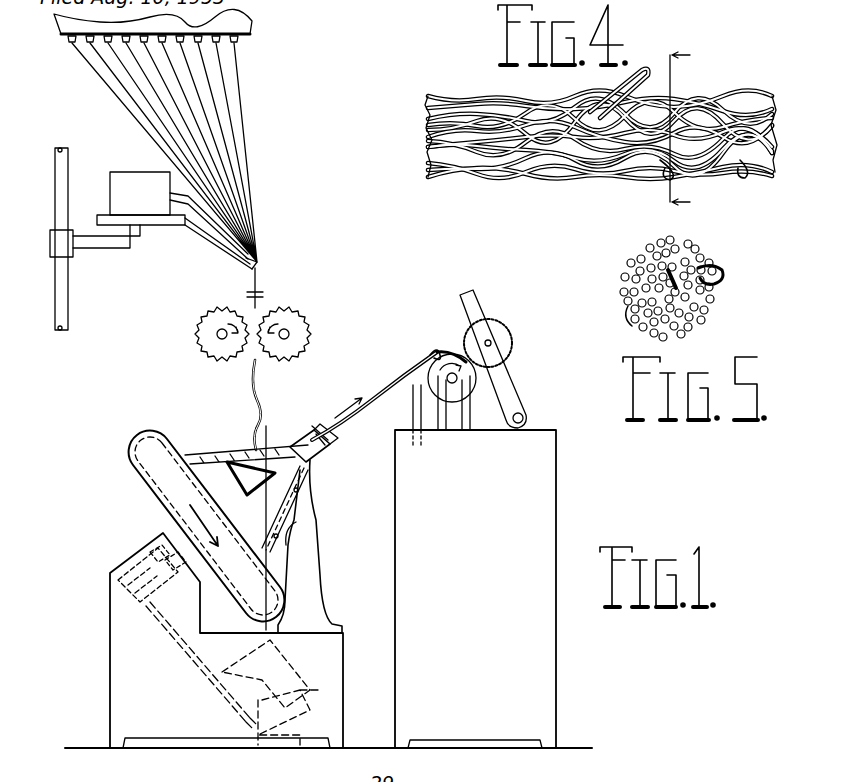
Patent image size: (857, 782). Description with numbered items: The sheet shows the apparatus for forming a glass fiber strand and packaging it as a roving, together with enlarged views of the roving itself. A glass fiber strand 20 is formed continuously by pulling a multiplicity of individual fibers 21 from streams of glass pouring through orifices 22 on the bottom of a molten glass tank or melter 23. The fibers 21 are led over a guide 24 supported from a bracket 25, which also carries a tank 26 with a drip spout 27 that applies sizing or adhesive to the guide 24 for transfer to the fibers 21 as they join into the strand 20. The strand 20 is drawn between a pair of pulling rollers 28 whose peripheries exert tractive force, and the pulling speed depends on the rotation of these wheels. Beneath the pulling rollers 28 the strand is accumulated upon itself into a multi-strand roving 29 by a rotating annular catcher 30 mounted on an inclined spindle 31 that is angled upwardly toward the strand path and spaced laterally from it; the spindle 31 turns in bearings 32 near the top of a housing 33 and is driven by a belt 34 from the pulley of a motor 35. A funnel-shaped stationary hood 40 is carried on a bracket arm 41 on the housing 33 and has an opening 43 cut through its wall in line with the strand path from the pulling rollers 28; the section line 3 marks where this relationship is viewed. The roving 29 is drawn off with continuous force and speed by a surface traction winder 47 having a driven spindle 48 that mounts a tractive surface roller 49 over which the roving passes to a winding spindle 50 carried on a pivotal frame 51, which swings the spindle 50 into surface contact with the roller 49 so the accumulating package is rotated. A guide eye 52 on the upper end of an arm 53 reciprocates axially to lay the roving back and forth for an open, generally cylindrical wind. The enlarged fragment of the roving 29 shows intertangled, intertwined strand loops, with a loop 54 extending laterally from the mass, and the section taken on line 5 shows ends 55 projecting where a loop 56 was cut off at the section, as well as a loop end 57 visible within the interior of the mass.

In FIG. 1, the section line 3- 3 is at (276, 429).
In FIG. 4, the section line 5- 5 is at (687, 129).
In FIG. 1, the glass fiber strand 20 is at (262, 284).
In FIG. 1, the individual fibers 21 is at (250, 140).
In FIG. 1, the orifices 22 is at (68, 44).
In FIG. 1, the molten glass tank or melter 23 is at (262, 31).
In FIG. 1, the guide 24 is at (263, 265).
In FIG. 1, the bracket 25 is at (58, 290).
In FIG. 1, the tank 26 is at (134, 173).
In FIG. 1, the drip spout 27 is at (225, 237).
In FIG. 1, the pulling rollers 28 is at (320, 324).
In FIG. 1, the roving 29 is at (392, 380).
In FIG. 4, the roving 29 is at (740, 80).
In FIG. 5, the roving 29 is at (718, 249).
In FIG. 1, the rotating annular catcher 30 is at (131, 491).
In FIG. 1, the inclined spindle 31 is at (140, 557).
In FIG. 1, the bearings 32 is at (152, 543).
In FIG. 1, the housing 33 is at (110, 650).
In FIG. 1, the belt 34 is at (146, 612).
In FIG. 1, the motor 35 is at (322, 690).
In FIG. 1, the stationary hood 40 is at (312, 472).
In FIG. 1, the bracket arm 41 is at (320, 589).
In FIG. 1, the opening 43 is at (250, 460).
In FIG. 1, the surface traction winder 47 is at (562, 514).
In FIG. 1, the driven spindle 48 is at (460, 378).
In FIG. 1, the tractive surface roller 49 is at (473, 430).
In FIG. 1, the winding spindle 50 is at (492, 343).
In FIG. 1, the pivotal frame 51 is at (514, 400).
In FIG. 1, the guide eye 52 is at (437, 350).
In FIG. 1, the arm 53 is at (413, 408).
In FIG. 4, the loop 54 is at (655, 68).
In FIG. 5, the loop 54 is at (724, 272).
In FIG. 5, the ends 55 is at (630, 322).
In FIG. 4, the loop 56 is at (750, 175).
In FIG. 5, the loop end 57 is at (700, 290).